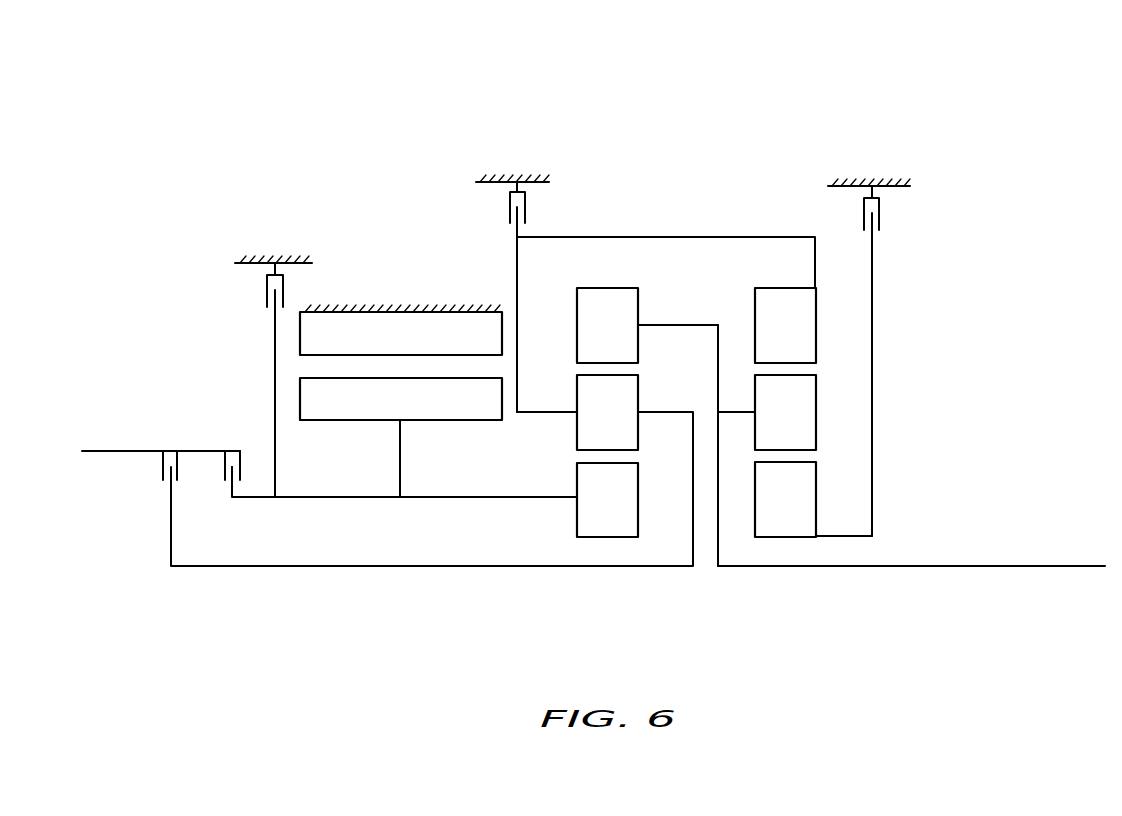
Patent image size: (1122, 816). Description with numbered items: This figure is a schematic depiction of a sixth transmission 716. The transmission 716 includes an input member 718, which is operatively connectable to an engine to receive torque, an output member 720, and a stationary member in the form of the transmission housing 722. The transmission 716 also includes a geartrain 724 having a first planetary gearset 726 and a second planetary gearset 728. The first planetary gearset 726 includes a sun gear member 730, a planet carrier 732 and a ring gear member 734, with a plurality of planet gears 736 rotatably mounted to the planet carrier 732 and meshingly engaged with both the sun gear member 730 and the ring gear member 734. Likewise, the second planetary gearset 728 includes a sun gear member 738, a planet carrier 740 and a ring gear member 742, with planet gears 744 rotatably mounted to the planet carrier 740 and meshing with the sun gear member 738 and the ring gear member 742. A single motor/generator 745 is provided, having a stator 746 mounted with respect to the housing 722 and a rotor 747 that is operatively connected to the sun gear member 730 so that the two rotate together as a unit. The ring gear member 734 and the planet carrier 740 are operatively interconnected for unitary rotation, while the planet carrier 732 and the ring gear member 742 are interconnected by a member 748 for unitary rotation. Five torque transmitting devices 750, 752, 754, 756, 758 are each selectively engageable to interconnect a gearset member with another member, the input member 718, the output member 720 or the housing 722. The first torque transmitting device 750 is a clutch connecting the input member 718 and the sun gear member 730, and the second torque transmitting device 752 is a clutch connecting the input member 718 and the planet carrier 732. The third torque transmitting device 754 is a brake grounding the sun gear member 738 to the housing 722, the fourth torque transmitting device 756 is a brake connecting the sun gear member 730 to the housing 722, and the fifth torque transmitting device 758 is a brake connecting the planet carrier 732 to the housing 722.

The transmission 716 is at (793, 96).
The input member 718 is at (130, 450).
The output member 720 is at (1017, 565).
The transmission housing 722 is at (244, 264).
The geartrain 724 is at (650, 594).
The first planetary gearset 726 is at (601, 266).
The second planetary gearset 728 is at (781, 262).
The sun gear member 730 is at (640, 498).
The planet carrier 732 is at (548, 412).
The ring gear member 734 is at (640, 307).
The planet gears 736 is at (640, 398).
The sun gear member 738 is at (818, 502).
The planet carrier 740 is at (742, 410).
The ring gear member 742 is at (818, 325).
The planet gears 744 is at (818, 413).
The motor/generator 745 is at (343, 449).
The stator 746 is at (401, 333).
The rotor 747 is at (401, 437).
The member 748 is at (702, 237).
The first torque transmitting device 750 is at (218, 467).
The second torque transmitting device 752 is at (152, 467).
The third torque transmitting device 754 is at (897, 228).
The fourth torque transmitting device 756 is at (252, 297).
The fifth torque transmitting device 758 is at (553, 210).